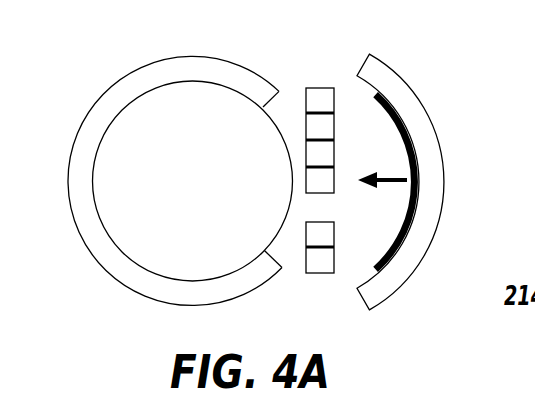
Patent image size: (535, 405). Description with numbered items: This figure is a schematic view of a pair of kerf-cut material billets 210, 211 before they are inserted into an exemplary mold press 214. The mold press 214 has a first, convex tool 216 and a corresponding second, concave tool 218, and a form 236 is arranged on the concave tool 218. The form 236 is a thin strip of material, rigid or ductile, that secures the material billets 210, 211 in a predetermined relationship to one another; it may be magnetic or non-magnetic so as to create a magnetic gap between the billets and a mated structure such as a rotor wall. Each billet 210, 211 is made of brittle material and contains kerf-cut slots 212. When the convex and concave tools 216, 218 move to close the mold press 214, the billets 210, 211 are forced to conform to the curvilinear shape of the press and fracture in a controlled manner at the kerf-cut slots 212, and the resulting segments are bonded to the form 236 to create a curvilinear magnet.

The mold press 214 is at (113, 63).
The first, convex tool 216 is at (278, 117).
The kerf-cut material billet 211 is at (318, 102).
The kerf-cut material billet 210 is at (318, 273).
The kerf-cut slots 212 is at (320, 246).
The second, concave tool 218 is at (420, 103).
The form 236 is at (415, 147).